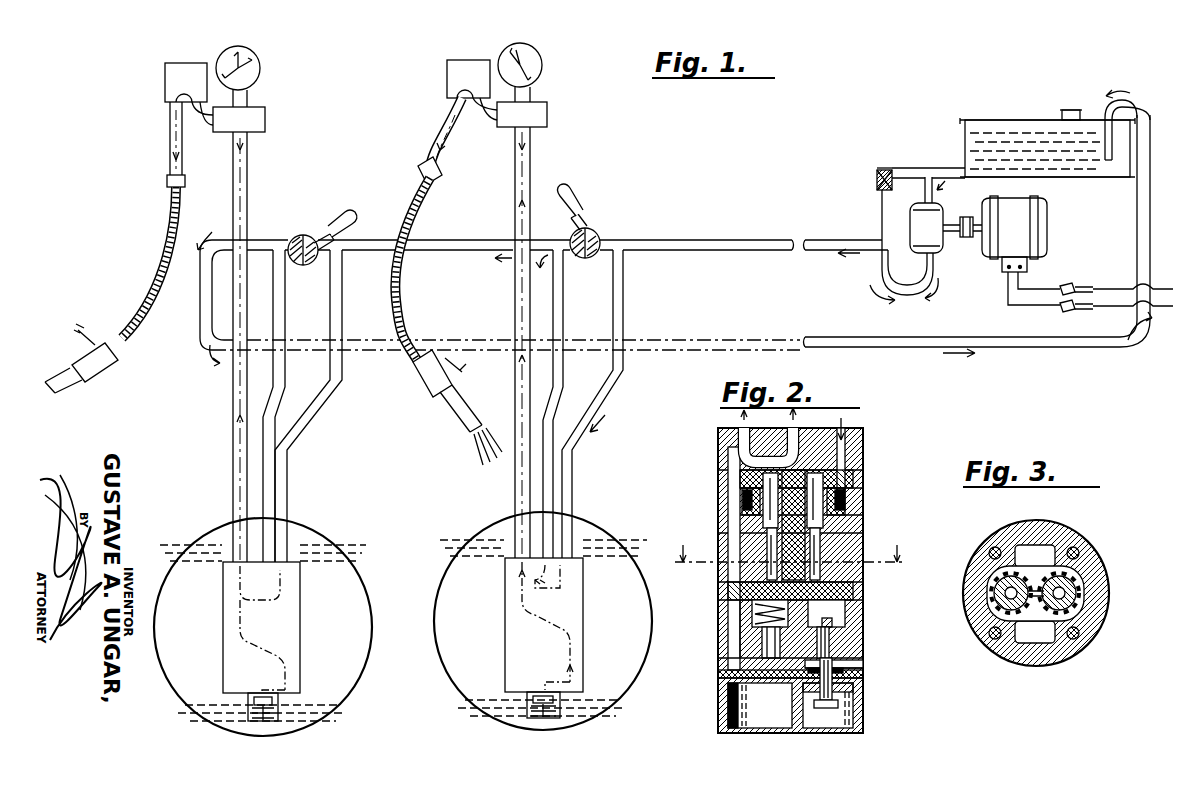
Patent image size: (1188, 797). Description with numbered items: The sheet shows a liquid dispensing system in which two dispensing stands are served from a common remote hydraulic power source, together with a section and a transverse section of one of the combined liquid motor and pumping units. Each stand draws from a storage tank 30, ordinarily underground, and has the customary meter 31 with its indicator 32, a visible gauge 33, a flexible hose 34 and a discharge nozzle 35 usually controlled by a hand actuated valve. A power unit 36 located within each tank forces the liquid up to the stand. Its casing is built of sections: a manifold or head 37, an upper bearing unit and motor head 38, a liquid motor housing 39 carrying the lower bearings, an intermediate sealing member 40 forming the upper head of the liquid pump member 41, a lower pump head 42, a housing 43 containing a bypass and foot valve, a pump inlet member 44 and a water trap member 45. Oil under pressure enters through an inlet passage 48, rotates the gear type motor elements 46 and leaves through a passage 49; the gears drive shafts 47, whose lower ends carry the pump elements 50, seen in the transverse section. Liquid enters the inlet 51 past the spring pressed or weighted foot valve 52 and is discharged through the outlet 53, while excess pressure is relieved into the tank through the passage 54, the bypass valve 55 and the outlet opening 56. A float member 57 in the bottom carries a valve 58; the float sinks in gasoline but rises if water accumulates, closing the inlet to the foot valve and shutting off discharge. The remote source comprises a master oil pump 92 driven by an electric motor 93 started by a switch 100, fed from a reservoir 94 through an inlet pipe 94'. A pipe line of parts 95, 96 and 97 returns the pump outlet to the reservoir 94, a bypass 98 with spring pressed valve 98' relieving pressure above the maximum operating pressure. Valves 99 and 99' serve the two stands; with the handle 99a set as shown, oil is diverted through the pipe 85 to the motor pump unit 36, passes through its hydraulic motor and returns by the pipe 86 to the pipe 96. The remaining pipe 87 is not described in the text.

In FIG. 1, the storage tank 30 is at (188, 533).
In FIG. 1, the meter 31 is at (265, 118).
In FIG. 1, the indicator 32 is at (262, 62).
In FIG. 1, the visible gauge 33 is at (165, 73).
In FIG. 1, the flexible hose 34 is at (165, 276).
In FIG. 1, the discharge nozzle 35 is at (105, 368).
In FIG. 1, the power unit 36 is at (230, 633).
In FIG. 2, the manifold or head 37 is at (863, 441).
In FIG. 2, the upper bearing unit and motor head 38 is at (863, 478).
In FIG. 2, the liquid motor housing 39 is at (863, 506).
In FIG. 2, the intermediate sealing member 40 is at (730, 532).
In FIG. 2, the liquid pump member 41 is at (863, 584).
In FIG. 3, the liquid pump member 41 is at (1062, 538).
In FIG. 2, the lower pump head 42 is at (718, 599).
In FIG. 2, the housing containing bypass and foot valve 43 is at (863, 629).
In FIG. 2, the pump inlet member 44 is at (863, 681).
In FIG. 2, the water trap member 45 is at (863, 713).
In FIG. 2, the gear 46 is at (744, 500).
In FIG. 2, the shaft 47 is at (846, 521).
In FIG. 3, the shaft 47 is at (1000, 589).
In FIG. 2, the inlet passage 48 is at (845, 424).
In FIG. 2, the discharge passage 49 is at (806, 434).
In FIG. 2, the pump element 50 is at (870, 535).
In FIG. 3, the pump element 50 is at (1079, 557).
In FIG. 2, the inlet 51 is at (874, 666).
In FIG. 2, the foot valve 52 is at (863, 646).
In FIG. 2, the outlet 53 is at (741, 428).
In FIG. 2, the bypass passage 54 is at (733, 655).
In FIG. 2, the bypass valve 55 is at (762, 646).
In FIG. 2, the outlet opening 56 is at (752, 613).
In FIG. 2, the float member 57 is at (838, 722).
In FIG. 2, the valve 58 is at (846, 669).
In FIG. 1, the pipe 85 is at (318, 420).
In FIG. 1, the pipe 86 is at (275, 312).
In FIG. 1, the pipe 87 is at (233, 430).
In FIG. 1, the master oil pump 92 is at (934, 243).
In FIG. 1, the electric motor 93 is at (1021, 250).
In FIG. 1, the reservoir 94 is at (1055, 132).
In FIG. 1, the inlet pipe 94' is at (928, 156).
In FIG. 1, the pipe 95 is at (736, 240).
In FIG. 1, the pipe 96 is at (452, 241).
In FIG. 1, the pipe 97 is at (207, 318).
In FIG. 1, the bypass 98 is at (866, 187).
In FIG. 1, the spring pressed valve 98' is at (863, 178).
In FIG. 1, the valve 99 is at (599, 225).
In FIG. 1, the valve 99' is at (320, 227).
In FIG. 1, the handle 99a is at (566, 200).
In FIG. 1, the switch 100 is at (1070, 284).